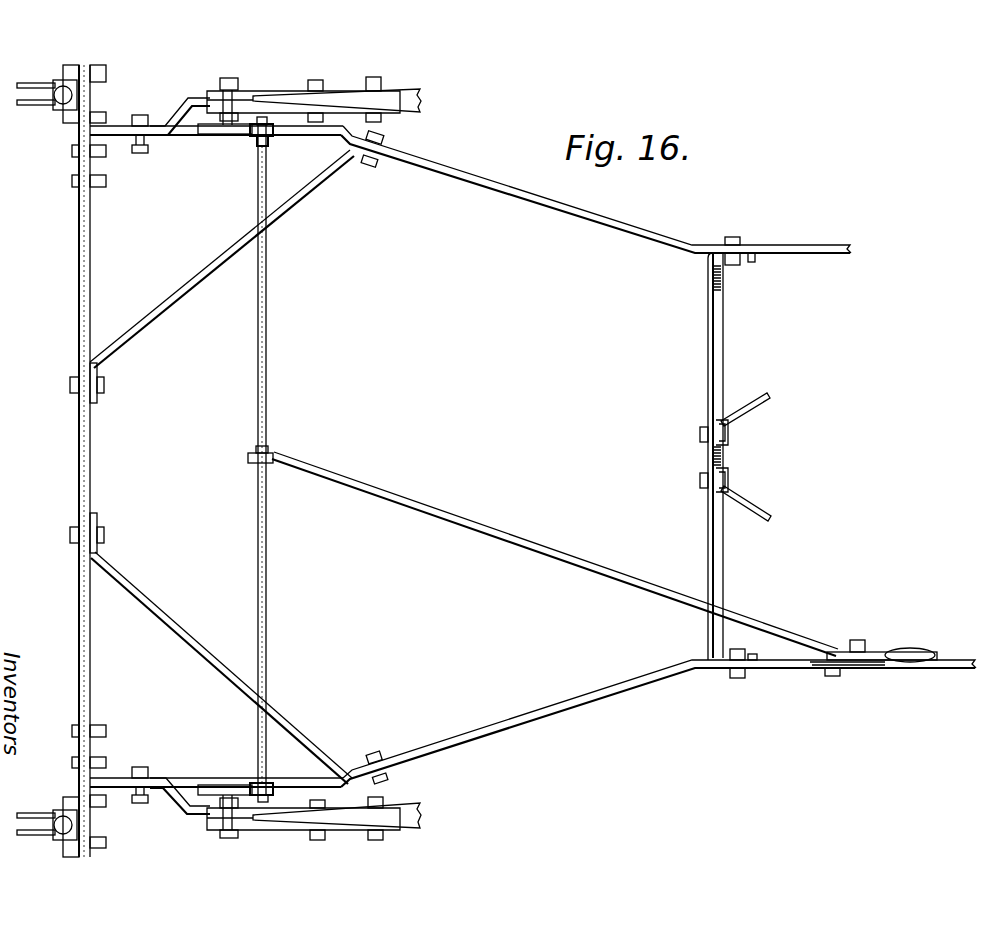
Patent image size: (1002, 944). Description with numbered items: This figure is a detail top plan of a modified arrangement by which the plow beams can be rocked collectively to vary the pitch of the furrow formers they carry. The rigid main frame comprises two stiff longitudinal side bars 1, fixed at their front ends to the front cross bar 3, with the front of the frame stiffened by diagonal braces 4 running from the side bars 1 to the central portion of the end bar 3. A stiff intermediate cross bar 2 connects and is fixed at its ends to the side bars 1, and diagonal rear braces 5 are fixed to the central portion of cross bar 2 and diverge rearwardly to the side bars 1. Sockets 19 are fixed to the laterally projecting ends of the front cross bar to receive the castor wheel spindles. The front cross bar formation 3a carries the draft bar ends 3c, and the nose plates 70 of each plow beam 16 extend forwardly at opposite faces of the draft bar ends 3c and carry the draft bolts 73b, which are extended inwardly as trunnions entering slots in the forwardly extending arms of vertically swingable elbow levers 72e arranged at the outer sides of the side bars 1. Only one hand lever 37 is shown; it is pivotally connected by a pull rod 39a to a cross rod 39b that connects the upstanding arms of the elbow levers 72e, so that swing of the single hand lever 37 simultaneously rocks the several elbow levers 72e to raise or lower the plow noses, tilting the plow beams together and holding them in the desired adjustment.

The side bars 1 is at (566, 212).
The intermediate cross bar 2 is at (707, 333).
The front cross bar 3 is at (79, 423).
The main frame front cross bar member 3a is at (77, 132).
The draft bar ends 3c is at (188, 97).
The diagonal braces 4 is at (191, 282).
The diagonal rear braces 5 is at (765, 393).
The plow beam 16 is at (413, 103).
The sockets 19 is at (53, 107).
The hand lever 37 is at (878, 652).
The pull rod 39a is at (555, 549).
The cross rod 39b is at (266, 400).
The plow beam extension or nose plates 70 is at (273, 92).
The elbow levers 72e is at (213, 134).
The draft bolts 73b is at (213, 115).